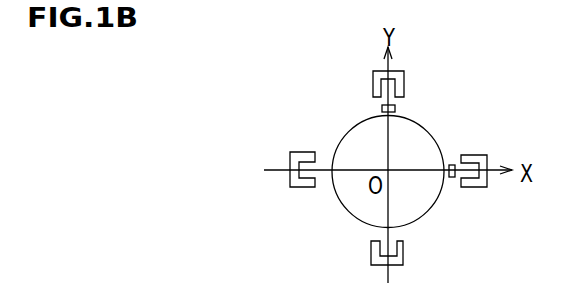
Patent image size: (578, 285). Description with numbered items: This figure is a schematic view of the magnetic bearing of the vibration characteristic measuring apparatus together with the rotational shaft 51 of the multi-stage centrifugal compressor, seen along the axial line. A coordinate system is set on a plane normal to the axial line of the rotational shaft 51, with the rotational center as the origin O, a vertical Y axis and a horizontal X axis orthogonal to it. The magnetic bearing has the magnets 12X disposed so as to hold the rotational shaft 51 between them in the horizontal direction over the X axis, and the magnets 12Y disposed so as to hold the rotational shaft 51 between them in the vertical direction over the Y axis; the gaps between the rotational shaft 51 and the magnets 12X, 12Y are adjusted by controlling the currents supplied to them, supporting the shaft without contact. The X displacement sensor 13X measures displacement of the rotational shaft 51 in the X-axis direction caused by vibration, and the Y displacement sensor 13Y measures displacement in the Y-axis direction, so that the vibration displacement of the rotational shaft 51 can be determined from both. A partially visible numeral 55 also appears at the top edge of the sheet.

The rotational shaft 51 is at (342, 205).
The magnets 12X is at (300, 152).
The magnets 12Y is at (403, 72).
The X displacement sensor 13X is at (452, 164).
The Y displacement sensor 13Y is at (396, 108).
The element 55 (cut off) 55 is at (470, 7).